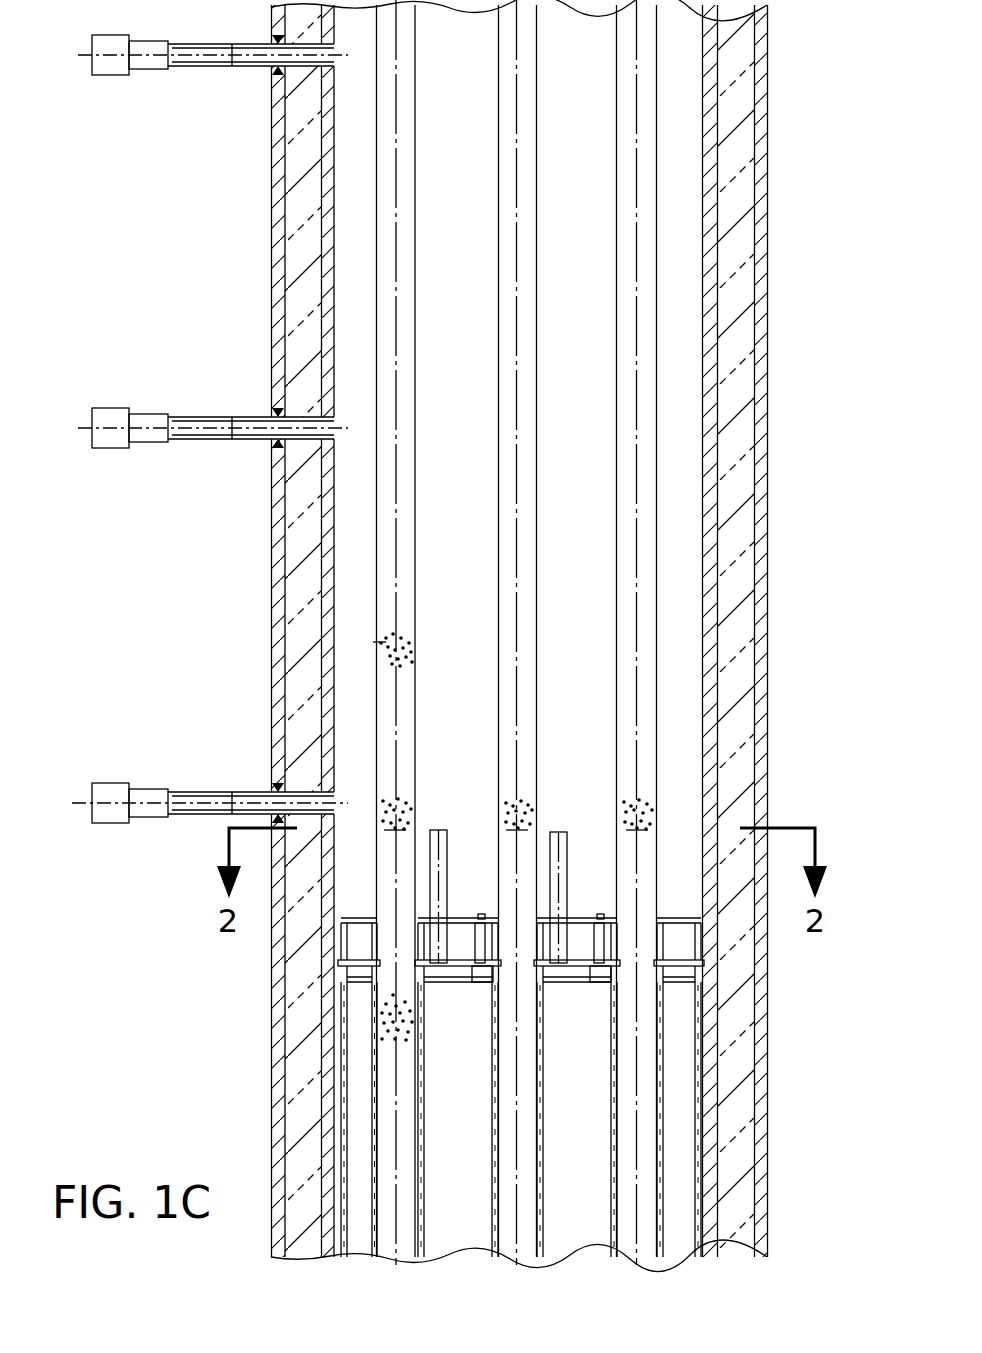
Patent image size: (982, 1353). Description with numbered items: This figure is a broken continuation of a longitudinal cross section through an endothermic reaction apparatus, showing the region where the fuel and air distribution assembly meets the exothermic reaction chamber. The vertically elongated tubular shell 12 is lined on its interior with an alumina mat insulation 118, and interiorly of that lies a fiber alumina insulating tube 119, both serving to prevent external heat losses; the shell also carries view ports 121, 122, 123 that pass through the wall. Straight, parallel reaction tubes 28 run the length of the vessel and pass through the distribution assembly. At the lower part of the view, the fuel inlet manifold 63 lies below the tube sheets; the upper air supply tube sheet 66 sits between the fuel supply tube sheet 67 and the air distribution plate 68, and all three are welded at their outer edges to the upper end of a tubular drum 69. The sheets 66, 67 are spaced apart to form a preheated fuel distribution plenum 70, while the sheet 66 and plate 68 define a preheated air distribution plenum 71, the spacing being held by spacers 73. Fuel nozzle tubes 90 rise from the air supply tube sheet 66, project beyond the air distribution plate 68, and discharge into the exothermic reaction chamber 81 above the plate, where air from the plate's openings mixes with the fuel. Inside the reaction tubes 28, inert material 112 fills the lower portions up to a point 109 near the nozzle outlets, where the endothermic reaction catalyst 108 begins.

The tubular shell 12 is at (552, 631).
The reaction tubes 28 is at (497, 495).
The fuel inlet manifold 63 is at (685, 1080).
The upper air supply tube sheet 66 is at (675, 958).
The fuel supply tube sheet 67 is at (680, 985).
The air distribution plate 68 is at (680, 920).
The tubular drum 69 is at (718, 1167).
The preheated fuel distribution plenum 70 is at (462, 972).
The preheated air distribution plenum 71 is at (580, 943).
The spacers 73 is at (473, 943).
The exothermic reaction chamber 81 is at (685, 472).
The fuel nozzle tubes 90 is at (447, 833).
The endothermic reaction catalyst 108 is at (385, 648).
The catalyst starting point 109 is at (392, 832).
The inert material 112 is at (385, 1028).
The alumina mat insulation 118 is at (737, 168).
The fiber alumina insulating tube 119 is at (712, 245).
The view port 121 is at (172, 68).
The view port 122 is at (213, 418).
The view port 123 is at (211, 793).